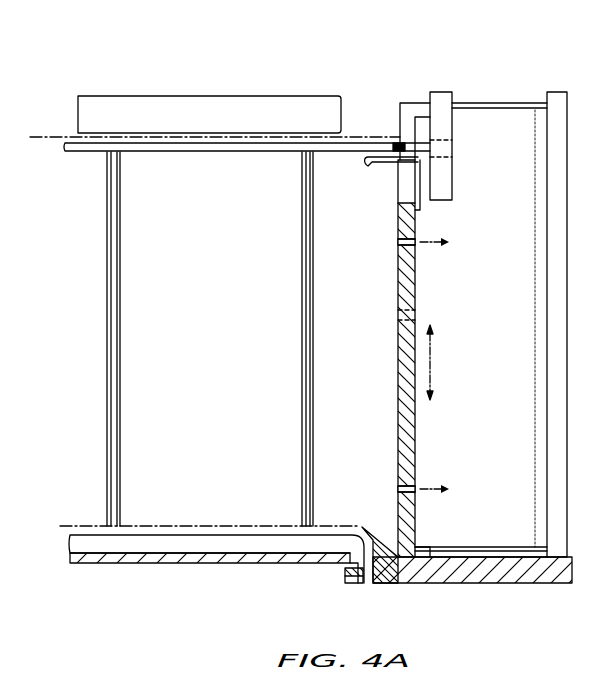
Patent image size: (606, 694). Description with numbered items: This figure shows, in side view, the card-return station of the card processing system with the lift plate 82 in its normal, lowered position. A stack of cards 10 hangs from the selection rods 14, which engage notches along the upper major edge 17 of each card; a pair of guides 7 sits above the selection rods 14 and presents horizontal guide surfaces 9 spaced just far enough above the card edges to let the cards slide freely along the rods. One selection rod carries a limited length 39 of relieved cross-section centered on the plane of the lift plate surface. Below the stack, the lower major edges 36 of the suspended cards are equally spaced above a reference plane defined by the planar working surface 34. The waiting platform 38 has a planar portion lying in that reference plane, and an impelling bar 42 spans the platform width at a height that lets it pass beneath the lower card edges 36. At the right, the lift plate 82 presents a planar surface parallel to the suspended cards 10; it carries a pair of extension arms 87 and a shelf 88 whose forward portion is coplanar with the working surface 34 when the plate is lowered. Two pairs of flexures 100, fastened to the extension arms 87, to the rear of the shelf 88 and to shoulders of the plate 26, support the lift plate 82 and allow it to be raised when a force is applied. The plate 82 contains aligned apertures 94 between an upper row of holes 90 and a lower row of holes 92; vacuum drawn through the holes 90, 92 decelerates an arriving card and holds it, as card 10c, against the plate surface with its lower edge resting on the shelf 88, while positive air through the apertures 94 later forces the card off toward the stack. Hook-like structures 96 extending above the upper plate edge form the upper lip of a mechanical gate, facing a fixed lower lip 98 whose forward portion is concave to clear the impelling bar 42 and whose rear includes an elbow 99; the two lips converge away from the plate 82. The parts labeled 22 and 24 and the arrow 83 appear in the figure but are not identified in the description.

The guides 7 is at (177, 98).
The horizontal guide surface 9 is at (344, 133).
The cards 10 is at (211, 341).
The card 10c is at (397, 287).
The selection rods 14 is at (218, 136).
The upper major card edge 17 is at (186, 152).
The guide slot 22 is at (450, 141).
The guide block 24 is at (452, 186).
The plate 26 is at (568, 226).
The working surface 34 is at (500, 552).
The lower major edge 36 is at (168, 526).
The waiting platform 38 is at (186, 553).
The limited length of relieved cross-section 39 is at (397, 143).
The impelling bar 42 is at (289, 545).
The lift plate 82 is at (410, 360).
The travel direction 83 is at (432, 370).
The extension arms 87 is at (402, 108).
The shelf 88 is at (430, 565).
The upper row of holes 90 is at (421, 244).
The lower row of holes 92 is at (420, 490).
The apertures 94 is at (417, 314).
The hook-like structures 96 is at (366, 162).
The lower lip 98 is at (368, 583).
The elbow 99 is at (392, 540).
The flexures 100 is at (495, 110).